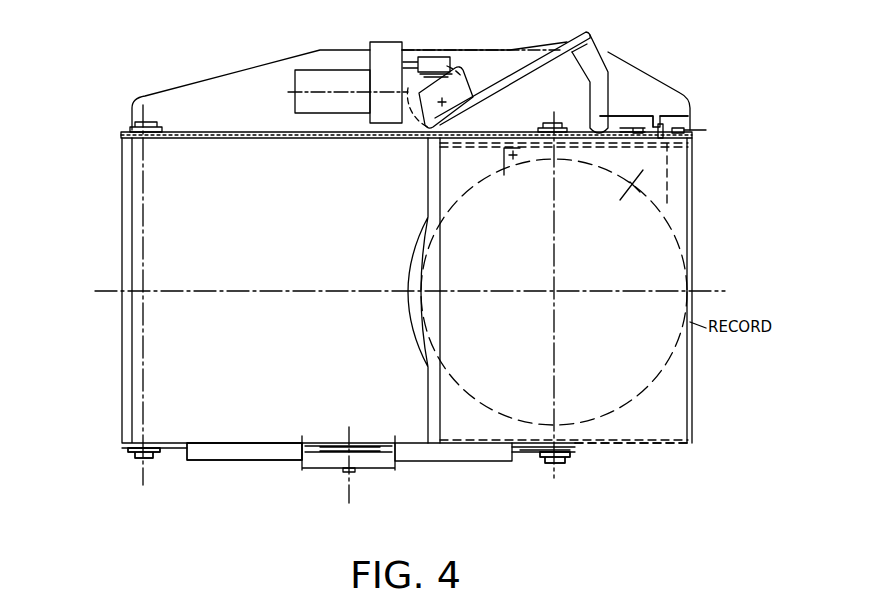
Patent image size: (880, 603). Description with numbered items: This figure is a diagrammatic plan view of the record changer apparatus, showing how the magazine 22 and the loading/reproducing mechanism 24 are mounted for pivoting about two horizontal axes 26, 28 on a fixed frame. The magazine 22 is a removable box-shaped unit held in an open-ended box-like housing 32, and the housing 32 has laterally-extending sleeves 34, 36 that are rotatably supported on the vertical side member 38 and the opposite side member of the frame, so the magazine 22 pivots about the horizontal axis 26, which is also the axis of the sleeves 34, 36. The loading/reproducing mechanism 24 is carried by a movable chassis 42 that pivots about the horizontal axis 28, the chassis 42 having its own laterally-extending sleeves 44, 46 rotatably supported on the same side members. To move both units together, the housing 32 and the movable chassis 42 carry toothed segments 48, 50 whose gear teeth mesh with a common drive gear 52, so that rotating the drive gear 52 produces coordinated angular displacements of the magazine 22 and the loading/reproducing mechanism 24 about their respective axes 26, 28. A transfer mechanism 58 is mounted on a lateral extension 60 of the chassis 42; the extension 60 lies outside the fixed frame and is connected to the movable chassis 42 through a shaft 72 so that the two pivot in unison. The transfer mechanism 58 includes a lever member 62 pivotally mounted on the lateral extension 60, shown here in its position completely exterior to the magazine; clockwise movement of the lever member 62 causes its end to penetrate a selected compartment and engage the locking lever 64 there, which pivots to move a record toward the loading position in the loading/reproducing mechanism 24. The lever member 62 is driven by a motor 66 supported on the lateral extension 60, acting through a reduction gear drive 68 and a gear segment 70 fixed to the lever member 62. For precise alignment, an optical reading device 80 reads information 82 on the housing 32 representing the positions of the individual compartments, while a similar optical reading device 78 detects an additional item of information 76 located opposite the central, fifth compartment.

The magazine 22 is at (672, 218).
The loading/reproducing mechanism 24 is at (168, 258).
The horizontal axis 26 is at (560, 462).
The horizontal axis 28 is at (148, 458).
The housing 32 is at (648, 445).
The sleeve 34 is at (546, 463).
The sleeve 36 is at (549, 108).
The vertical side member 38 is at (520, 453).
The movable chassis 42 is at (216, 455).
The sleeve 44 is at (128, 452).
The sleeve 46 is at (140, 138).
The segment 48 is at (425, 452).
The segment 50 is at (260, 455).
The drive gear 52 is at (370, 461).
The transfer mechanism 58 is at (470, 44).
The lateral extension 60 is at (175, 101).
The lever member 62 is at (605, 63).
The locking lever 64 is at (619, 195).
The motor 66 is at (333, 108).
The reduction gear drive 68 is at (432, 58).
The gear segment 70 is at (408, 125).
The shaft 72 is at (134, 126).
The item of information 76 is at (684, 127).
The optical reading device 78 is at (704, 128).
The optical reading device 80 is at (632, 128).
The information 82 is at (661, 124).